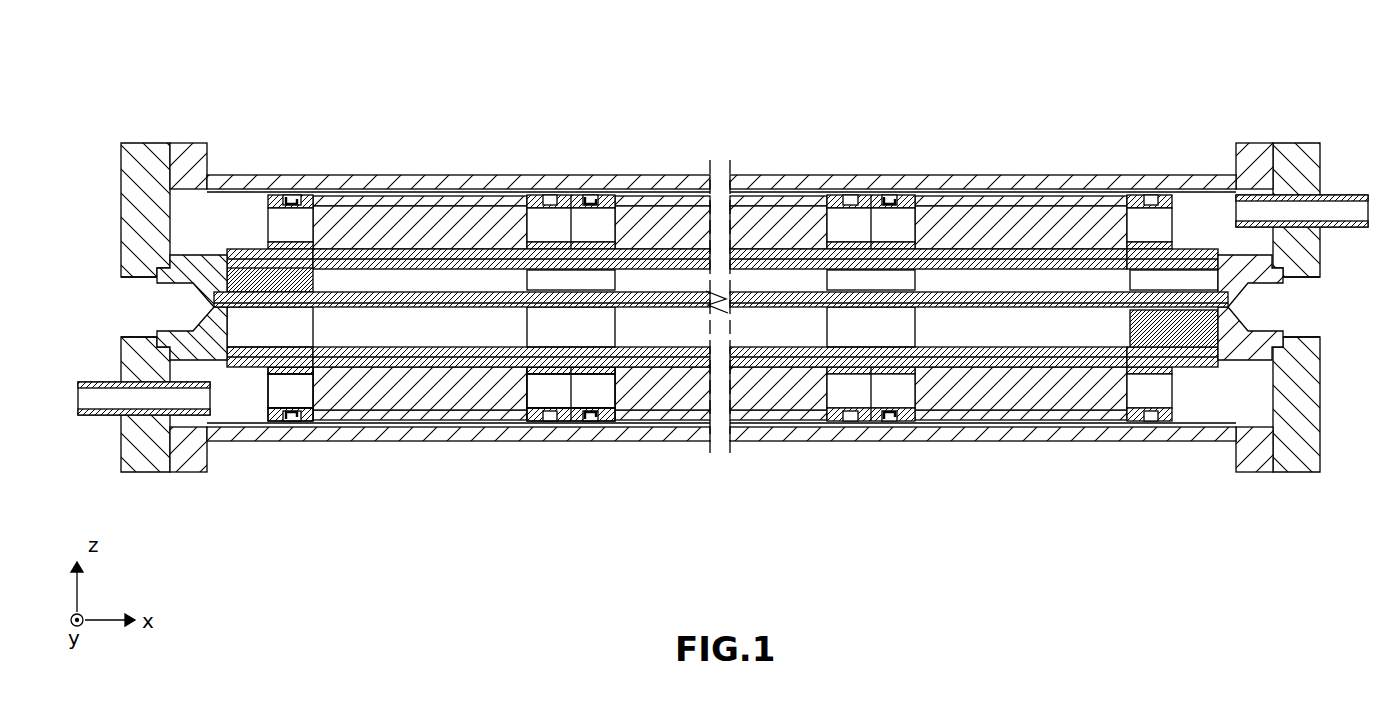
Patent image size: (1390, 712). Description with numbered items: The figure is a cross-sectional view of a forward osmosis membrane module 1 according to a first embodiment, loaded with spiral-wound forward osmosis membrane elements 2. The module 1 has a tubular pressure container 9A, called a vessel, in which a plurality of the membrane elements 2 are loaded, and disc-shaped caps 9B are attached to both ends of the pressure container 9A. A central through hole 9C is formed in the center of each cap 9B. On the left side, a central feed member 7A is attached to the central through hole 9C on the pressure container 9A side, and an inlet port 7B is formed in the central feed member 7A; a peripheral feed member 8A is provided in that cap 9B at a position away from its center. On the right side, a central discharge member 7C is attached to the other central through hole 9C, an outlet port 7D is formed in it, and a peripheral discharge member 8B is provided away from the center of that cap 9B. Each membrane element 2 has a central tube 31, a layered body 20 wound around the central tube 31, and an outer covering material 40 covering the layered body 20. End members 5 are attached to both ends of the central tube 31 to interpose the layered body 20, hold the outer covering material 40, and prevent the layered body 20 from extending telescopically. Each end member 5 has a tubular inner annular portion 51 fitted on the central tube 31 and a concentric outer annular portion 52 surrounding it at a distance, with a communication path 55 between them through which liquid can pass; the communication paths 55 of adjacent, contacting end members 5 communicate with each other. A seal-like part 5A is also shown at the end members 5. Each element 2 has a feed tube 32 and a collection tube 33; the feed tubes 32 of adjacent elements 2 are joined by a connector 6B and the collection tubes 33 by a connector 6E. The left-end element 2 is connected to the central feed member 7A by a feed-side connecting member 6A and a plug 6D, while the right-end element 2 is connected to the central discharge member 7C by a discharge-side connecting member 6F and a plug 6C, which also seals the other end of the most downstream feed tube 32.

The forward osmosis membrane module 1 is at (984, 97).
The spiral-wound forward osmosis membrane element 2 is at (387, 190).
The layered body 20 is at (413, 207).
The outer covering material 40 is at (452, 200).
The end member 5 is at (301, 200).
The seal member 5A is at (290, 198).
The inner annular portion 51 is at (275, 367).
The outer annular portion 52 is at (305, 412).
The communication path 55 is at (285, 412).
The feed-side connecting member 6A is at (278, 395).
The connector 6B is at (592, 420).
The plug 6C is at (1183, 365).
The plug 6D is at (240, 258).
The connector 6E is at (520, 262).
The discharge-side connecting member 6F is at (1180, 345).
The central feed member 7A is at (182, 280).
The inlet port 7B is at (196, 185).
The central discharge member 7C is at (1222, 262).
The outlet port 7D is at (1255, 470).
The peripheral feed member 8A is at (143, 398).
The peripheral discharge member 8B is at (1320, 207).
The pressure container 9A is at (678, 176).
The cap 9B is at (150, 155).
The central through hole 9C is at (130, 337).
The central tube 31 is at (392, 366).
The feed tube 32 is at (422, 352).
The collection tube 33 is at (453, 344).